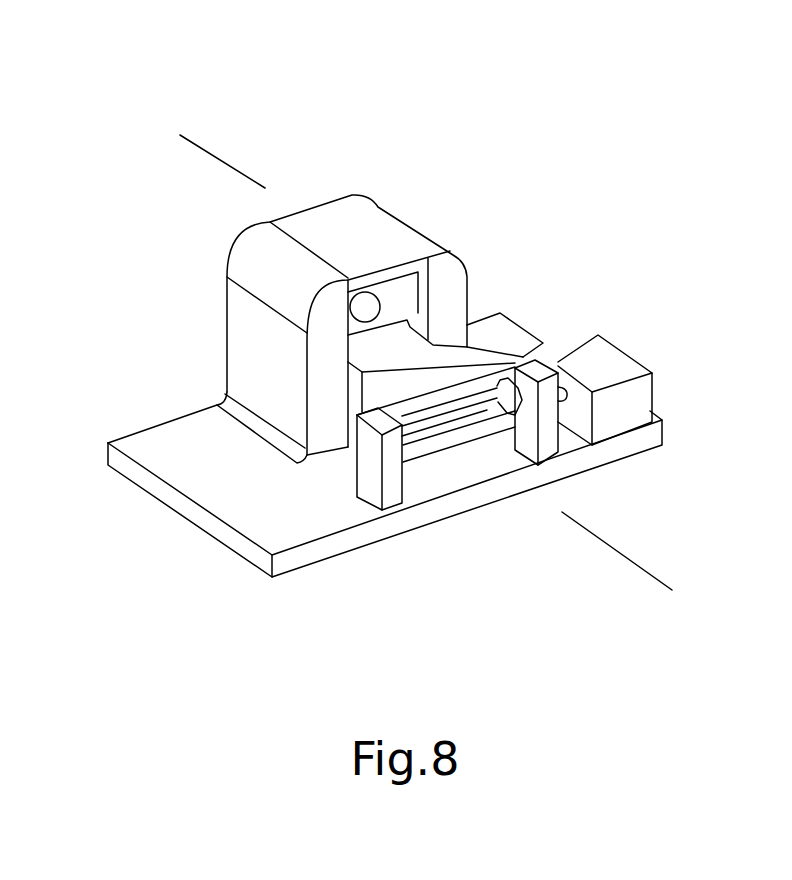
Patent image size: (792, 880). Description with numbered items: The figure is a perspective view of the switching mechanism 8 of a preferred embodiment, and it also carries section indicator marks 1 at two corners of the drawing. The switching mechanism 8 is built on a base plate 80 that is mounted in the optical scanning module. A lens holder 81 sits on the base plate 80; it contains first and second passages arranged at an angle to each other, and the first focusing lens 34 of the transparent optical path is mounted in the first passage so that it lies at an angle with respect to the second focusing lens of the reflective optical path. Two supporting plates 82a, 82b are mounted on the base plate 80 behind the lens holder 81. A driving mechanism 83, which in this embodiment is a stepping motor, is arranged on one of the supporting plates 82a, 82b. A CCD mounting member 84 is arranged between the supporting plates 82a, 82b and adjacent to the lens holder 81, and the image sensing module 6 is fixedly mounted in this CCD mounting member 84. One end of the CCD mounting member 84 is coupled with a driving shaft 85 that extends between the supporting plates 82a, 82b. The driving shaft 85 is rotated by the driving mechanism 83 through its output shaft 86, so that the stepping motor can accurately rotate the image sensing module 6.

The switching mechanism 8 is at (534, 163).
The section line indicator 1 is at (214, 163).
The base plate 80 is at (203, 485).
The lens holder 81 is at (322, 222).
The first focusing lens 34 is at (375, 308).
The CCD mounting member 84 is at (477, 362).
The supporting plate 82a is at (553, 442).
The supporting plate 82b is at (393, 487).
The driving shaft 85 is at (463, 420).
The image sensing module 6 is at (428, 418).
The driving mechanism 83 is at (561, 391).
The output shaft 86 is at (577, 385).